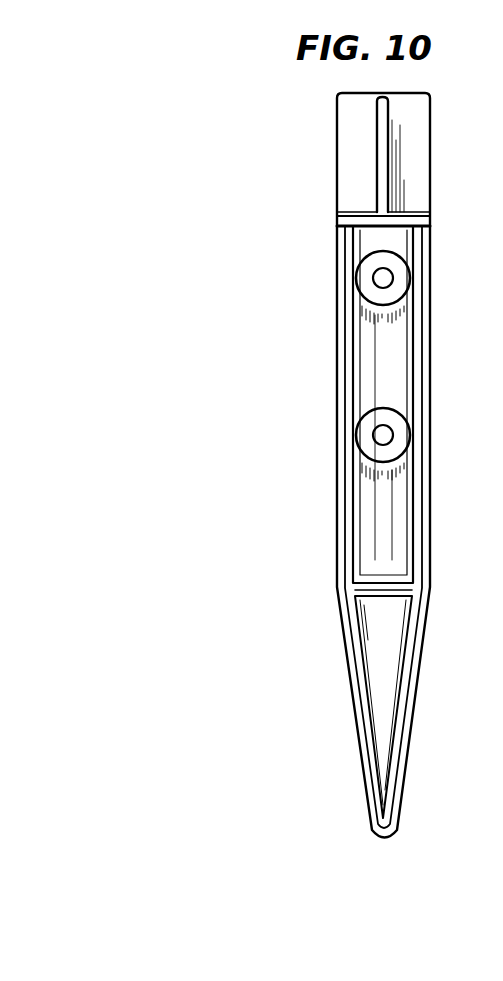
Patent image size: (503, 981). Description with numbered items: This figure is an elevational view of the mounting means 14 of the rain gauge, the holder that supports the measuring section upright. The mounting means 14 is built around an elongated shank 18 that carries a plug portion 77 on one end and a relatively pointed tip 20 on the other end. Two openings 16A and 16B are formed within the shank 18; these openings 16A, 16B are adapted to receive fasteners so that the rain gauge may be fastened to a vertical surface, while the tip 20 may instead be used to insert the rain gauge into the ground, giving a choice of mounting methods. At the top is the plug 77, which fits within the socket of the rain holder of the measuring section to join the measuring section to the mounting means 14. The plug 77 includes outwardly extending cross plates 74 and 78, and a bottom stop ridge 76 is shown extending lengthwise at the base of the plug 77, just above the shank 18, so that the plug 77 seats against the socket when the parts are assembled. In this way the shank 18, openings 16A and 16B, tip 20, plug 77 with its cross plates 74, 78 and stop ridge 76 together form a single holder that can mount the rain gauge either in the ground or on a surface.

The mounting means 14 is at (447, 390).
The opening 16A is at (389, 276).
The opening 16B is at (389, 433).
The shank 18 is at (447, 602).
The tip 20 is at (380, 841).
The cross plate 74 is at (392, 160).
The bottom stop ridge 76 is at (406, 220).
The plug portion 77 is at (289, 94).
The cross plate 78 is at (352, 139).